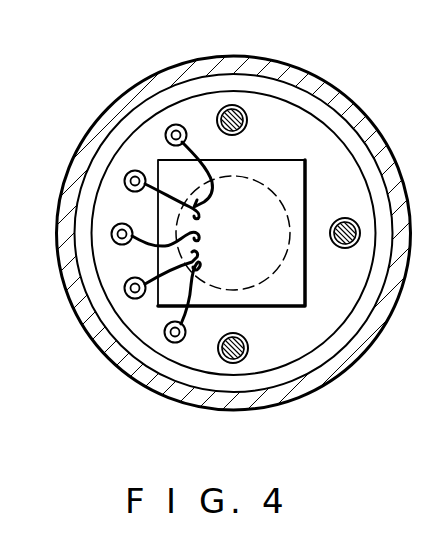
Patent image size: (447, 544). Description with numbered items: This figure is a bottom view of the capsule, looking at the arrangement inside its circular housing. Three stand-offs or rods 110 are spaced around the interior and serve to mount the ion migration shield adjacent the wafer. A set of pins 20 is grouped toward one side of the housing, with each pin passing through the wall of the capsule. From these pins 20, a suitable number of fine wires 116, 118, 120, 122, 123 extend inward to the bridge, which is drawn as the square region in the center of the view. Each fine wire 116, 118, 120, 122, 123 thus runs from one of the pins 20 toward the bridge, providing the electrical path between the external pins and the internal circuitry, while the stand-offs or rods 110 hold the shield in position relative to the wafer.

The stand-offs or rods 110 is at (232, 105).
The pins 20 is at (165, 337).
The fine wire 116 is at (187, 331).
The fine wire 118 is at (144, 300).
The fine wire 120 is at (199, 234).
The fine wire 122 is at (199, 217).
The fine wire 123 is at (192, 152).